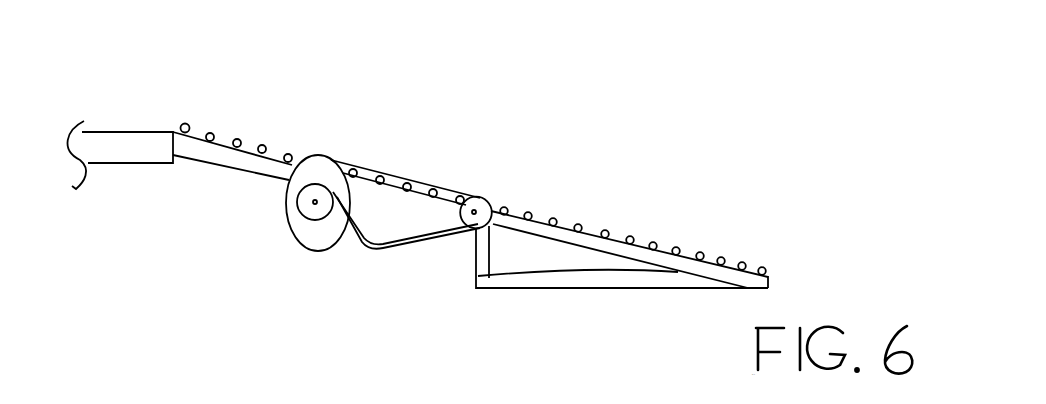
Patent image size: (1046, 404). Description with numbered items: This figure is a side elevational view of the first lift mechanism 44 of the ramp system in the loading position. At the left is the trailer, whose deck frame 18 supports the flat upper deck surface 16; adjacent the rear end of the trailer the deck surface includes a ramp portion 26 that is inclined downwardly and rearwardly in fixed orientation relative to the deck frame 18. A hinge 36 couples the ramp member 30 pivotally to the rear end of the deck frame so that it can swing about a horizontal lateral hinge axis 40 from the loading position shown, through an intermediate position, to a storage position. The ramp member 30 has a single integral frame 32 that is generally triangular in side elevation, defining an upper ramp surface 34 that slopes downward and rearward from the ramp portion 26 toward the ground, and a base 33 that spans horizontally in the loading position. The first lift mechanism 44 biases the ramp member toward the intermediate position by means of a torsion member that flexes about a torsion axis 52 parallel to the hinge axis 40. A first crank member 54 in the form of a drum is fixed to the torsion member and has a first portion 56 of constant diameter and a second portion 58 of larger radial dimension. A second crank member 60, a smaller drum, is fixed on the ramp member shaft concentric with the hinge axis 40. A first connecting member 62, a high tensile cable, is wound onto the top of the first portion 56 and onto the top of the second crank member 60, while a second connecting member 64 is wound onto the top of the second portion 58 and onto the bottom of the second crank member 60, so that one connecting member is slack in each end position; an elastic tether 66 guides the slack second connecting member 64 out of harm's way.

The deck surface 16 is at (98, 131).
The deck frame 18 is at (102, 165).
The ramp portion 26 is at (197, 132).
The ramp member 30 is at (670, 277).
The frame 32 is at (572, 277).
The base 33 is at (513, 290).
The ramp surface 34 is at (646, 248).
The hinge 36 is at (488, 150).
The hinge axis 40 is at (482, 200).
The first lift mechanism 44 is at (405, 173).
The torsion axis 52 is at (313, 203).
The first crank member 54 is at (282, 245).
The first portion 56 is at (302, 224).
The second portion 58 is at (288, 209).
The second crank member 60 is at (494, 201).
The first connecting member 62 is at (384, 239).
The second connecting member 64 is at (391, 173).
The elastic tether 66 is at (338, 252).